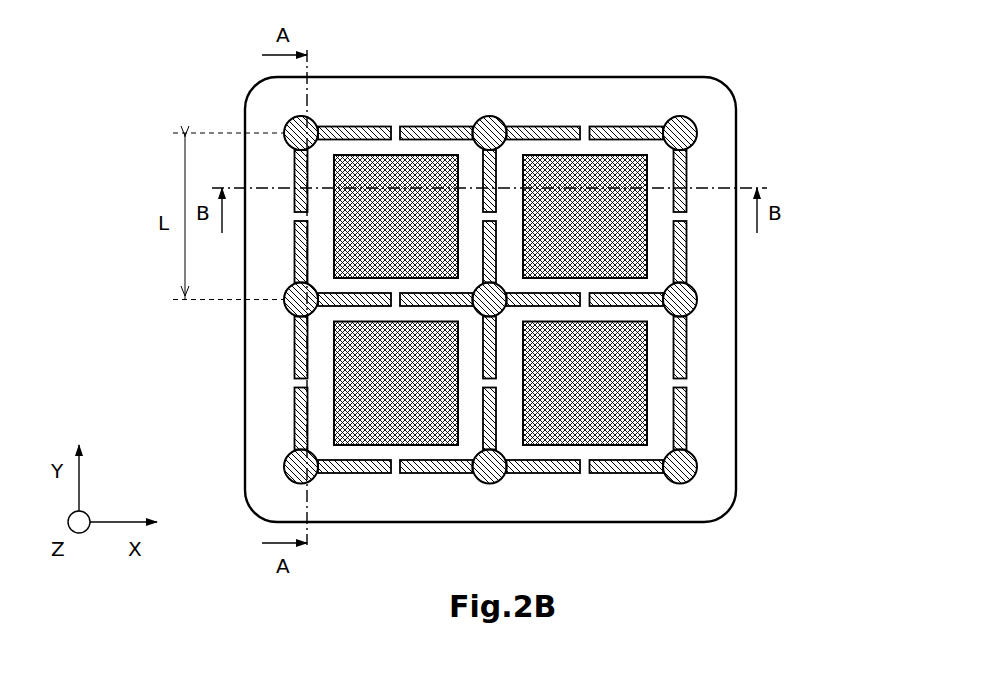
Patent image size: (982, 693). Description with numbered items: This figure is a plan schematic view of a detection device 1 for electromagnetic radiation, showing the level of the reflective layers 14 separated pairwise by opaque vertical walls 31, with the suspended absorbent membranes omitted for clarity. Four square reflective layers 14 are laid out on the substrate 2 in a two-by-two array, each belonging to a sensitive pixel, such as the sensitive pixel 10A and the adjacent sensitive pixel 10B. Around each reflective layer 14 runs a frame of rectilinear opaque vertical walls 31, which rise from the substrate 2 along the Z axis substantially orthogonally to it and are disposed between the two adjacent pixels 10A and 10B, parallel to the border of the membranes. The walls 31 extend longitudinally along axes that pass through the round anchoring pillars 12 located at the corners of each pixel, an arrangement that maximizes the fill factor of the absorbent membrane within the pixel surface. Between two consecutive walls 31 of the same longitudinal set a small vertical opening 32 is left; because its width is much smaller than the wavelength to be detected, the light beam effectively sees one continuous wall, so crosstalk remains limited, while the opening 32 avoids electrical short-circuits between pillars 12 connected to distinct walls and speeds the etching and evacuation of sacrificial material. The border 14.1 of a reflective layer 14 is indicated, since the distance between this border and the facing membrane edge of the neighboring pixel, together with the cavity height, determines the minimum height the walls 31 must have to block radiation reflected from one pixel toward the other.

The detection device 1 is at (458, 298).
The substrate 2 is at (736, 487).
The sensitive pixel 10A is at (437, 98).
The adjacent sensitive pixel 10B is at (640, 59).
The anchoring pillar 12 is at (698, 133).
The reflective layer 14 is at (407, 365).
The border of the reflective layer 14.1 is at (334, 422).
The opaque vertical wall 31 is at (688, 252).
The vertical opening 32 is at (295, 383).